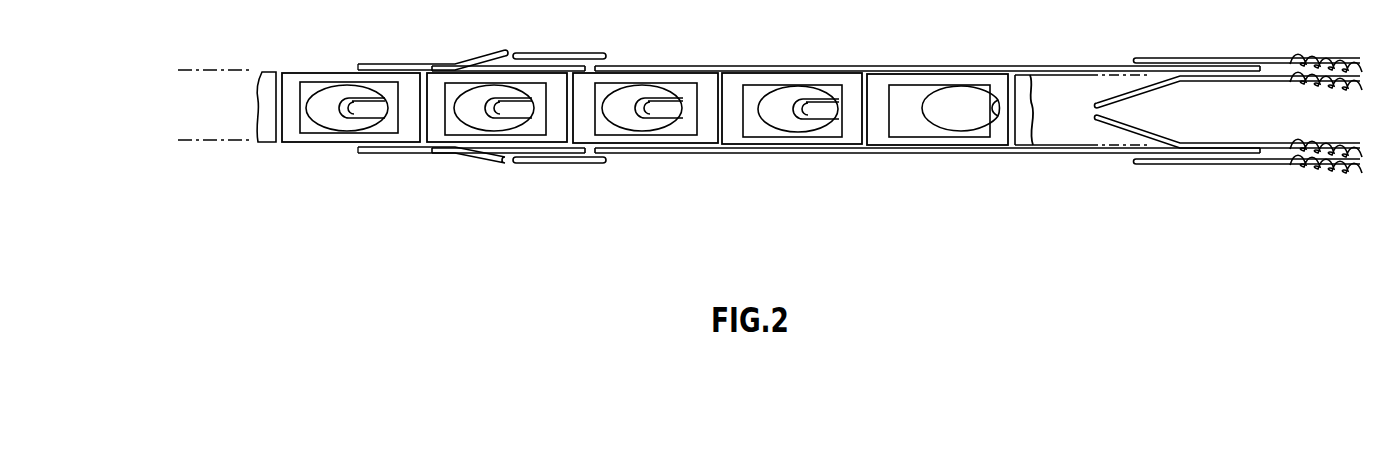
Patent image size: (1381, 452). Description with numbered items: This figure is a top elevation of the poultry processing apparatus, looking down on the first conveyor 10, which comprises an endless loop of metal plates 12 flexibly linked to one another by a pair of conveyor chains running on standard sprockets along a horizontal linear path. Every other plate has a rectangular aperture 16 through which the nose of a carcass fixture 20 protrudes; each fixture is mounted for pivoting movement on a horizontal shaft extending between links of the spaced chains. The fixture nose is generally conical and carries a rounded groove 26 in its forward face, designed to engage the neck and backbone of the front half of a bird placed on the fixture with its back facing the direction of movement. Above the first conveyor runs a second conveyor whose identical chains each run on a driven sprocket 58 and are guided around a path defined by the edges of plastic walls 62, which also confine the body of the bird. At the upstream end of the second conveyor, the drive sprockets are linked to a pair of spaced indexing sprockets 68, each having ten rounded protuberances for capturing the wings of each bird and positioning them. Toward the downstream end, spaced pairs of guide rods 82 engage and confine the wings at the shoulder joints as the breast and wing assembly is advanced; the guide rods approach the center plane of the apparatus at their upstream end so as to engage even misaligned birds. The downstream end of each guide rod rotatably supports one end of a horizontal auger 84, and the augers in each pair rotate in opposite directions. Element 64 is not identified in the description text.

The first conveyor 10 is at (222, 150).
The metal plates 12 is at (292, 137).
The rectangular aperture 16 is at (312, 128).
The carcass fixture 20 is at (327, 98).
The rounded groove 26 is at (367, 112).
The driven sprocket 58 is at (523, 57).
The plastic walls 62 is at (753, 155).
The upper rail 64 is at (742, 65).
The indexing sprockets 68 is at (600, 52).
The guide rods 82 is at (1176, 58).
The horizontal auger 84 is at (1333, 145).